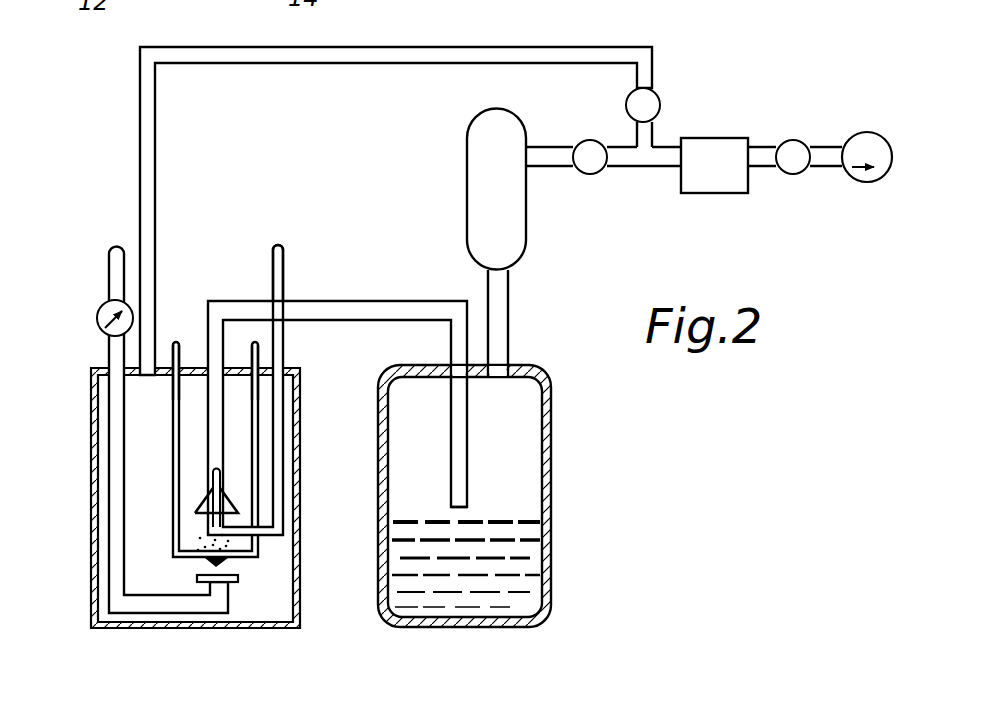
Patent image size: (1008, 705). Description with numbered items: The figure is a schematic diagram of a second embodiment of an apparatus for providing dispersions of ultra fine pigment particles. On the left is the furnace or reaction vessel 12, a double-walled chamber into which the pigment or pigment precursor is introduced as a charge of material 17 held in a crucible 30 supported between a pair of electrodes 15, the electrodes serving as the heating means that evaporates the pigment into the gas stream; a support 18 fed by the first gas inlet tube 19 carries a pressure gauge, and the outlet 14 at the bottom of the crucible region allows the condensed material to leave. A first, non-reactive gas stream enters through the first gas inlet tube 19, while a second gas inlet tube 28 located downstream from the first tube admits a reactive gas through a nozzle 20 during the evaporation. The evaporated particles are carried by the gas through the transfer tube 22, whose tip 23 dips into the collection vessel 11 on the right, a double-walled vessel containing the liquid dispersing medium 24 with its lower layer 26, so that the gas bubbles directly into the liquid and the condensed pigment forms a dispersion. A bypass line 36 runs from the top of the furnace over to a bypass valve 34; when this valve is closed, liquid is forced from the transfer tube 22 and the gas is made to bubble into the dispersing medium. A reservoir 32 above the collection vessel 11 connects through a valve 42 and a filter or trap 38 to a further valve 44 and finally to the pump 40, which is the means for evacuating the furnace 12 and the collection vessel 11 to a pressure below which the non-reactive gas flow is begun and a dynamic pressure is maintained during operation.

The collection vessel 11 is at (584, 470).
The reaction vessel 12 is at (90, 590).
The drain outlet 14 is at (230, 562).
The electrode plates 15 is at (171, 392).
The powder material 17 is at (235, 548).
The support platform 18 is at (213, 600).
The gas inlet tube with pressure gauge 19 is at (112, 226).
The nozzle 20 is at (243, 532).
The gas conduit 22 is at (243, 300).
The conduit outlet end 23 is at (468, 507).
The liquid 24 is at (551, 562).
The liquid bottom layer 26 is at (530, 604).
The return tube 28 is at (278, 230).
The cup 30 is at (258, 466).
The reservoir 32 is at (467, 135).
The valve 34 is at (657, 100).
The gas line 36 is at (476, 46).
The filter 38 is at (723, 137).
The pump 40 is at (858, 134).
The valve 42 is at (600, 172).
The valve 44 is at (795, 175).